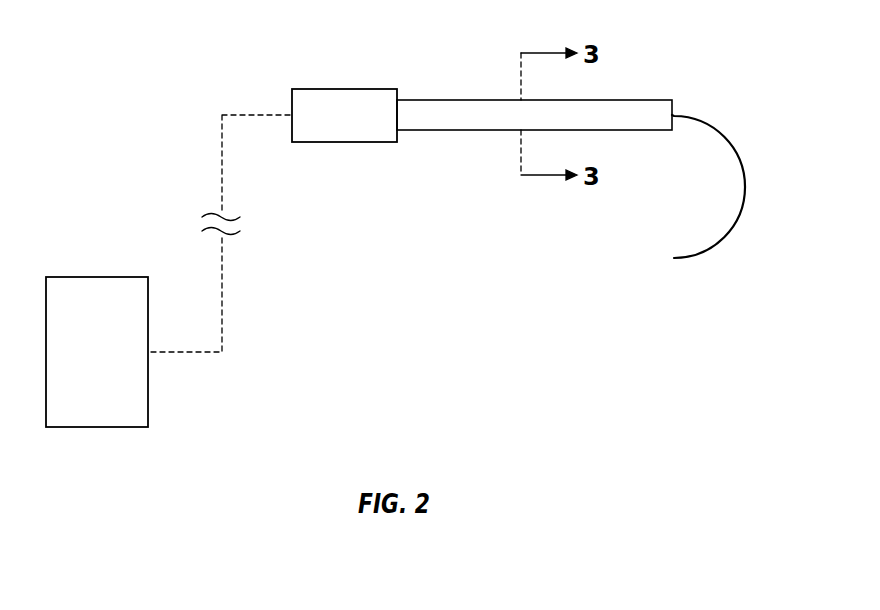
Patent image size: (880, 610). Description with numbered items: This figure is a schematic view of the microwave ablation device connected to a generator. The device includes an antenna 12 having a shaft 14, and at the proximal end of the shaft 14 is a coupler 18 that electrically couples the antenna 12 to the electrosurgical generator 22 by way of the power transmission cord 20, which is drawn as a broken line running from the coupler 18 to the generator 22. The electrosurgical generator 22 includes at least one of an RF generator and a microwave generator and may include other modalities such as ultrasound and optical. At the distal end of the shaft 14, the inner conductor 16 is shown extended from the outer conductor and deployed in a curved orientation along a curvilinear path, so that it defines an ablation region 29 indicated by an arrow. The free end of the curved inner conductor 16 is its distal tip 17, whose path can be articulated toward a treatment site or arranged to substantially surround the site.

The antenna 12 is at (453, 76).
The shaft 14 is at (642, 99).
The inner conductor 16 is at (746, 188).
The distal tip 17 is at (673, 259).
The coupler 18 is at (343, 89).
The cord 20 is at (222, 170).
The electrosurgical generator 22 is at (97, 277).
The ablation region 29 is at (686, 206).